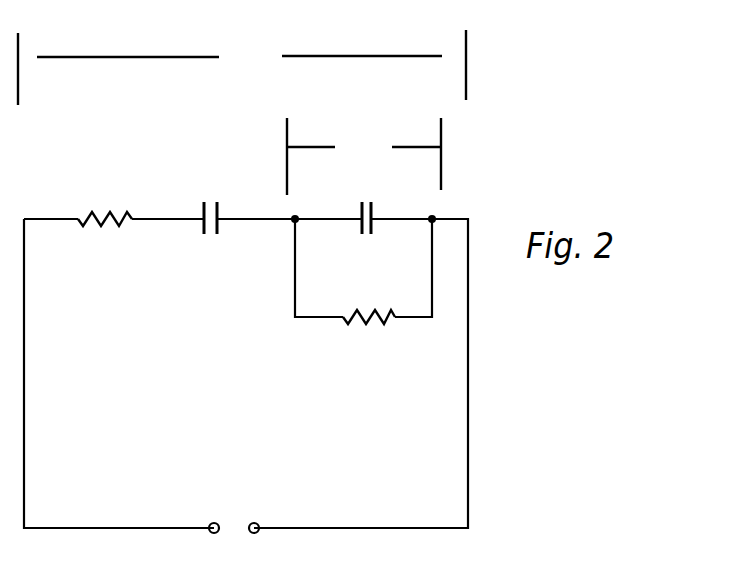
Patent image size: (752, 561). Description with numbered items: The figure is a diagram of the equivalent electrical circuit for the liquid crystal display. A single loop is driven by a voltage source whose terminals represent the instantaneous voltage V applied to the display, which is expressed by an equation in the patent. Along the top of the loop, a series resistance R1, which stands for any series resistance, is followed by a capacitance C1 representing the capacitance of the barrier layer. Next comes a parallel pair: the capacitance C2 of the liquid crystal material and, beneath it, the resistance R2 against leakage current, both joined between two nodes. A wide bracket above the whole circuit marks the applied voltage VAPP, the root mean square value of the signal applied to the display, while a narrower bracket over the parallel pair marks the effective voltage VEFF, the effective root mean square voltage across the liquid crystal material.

The series resistance R1 is at (105, 237).
The capacitance of barrier layer C1 is at (225, 233).
The capacitance of liquid crystal material C2 is at (370, 238).
The resistance against leakage current R2 is at (369, 336).
The instantaneous voltage applied to display V is at (234, 537).
The applied RMS voltage VAPP is at (242, 67).
The effective RMS voltage across liquid crystal material VEFF is at (364, 156).